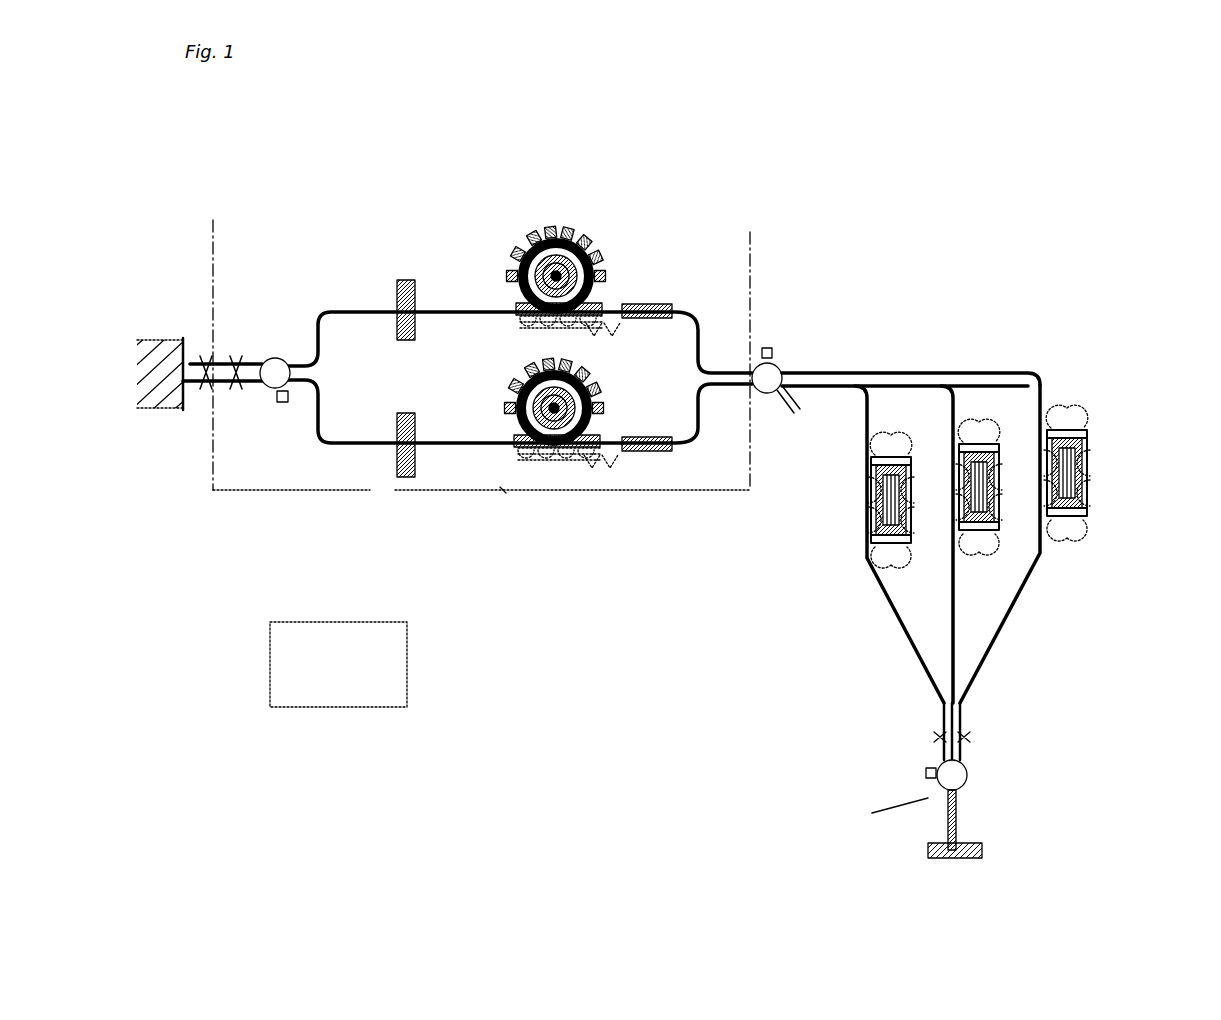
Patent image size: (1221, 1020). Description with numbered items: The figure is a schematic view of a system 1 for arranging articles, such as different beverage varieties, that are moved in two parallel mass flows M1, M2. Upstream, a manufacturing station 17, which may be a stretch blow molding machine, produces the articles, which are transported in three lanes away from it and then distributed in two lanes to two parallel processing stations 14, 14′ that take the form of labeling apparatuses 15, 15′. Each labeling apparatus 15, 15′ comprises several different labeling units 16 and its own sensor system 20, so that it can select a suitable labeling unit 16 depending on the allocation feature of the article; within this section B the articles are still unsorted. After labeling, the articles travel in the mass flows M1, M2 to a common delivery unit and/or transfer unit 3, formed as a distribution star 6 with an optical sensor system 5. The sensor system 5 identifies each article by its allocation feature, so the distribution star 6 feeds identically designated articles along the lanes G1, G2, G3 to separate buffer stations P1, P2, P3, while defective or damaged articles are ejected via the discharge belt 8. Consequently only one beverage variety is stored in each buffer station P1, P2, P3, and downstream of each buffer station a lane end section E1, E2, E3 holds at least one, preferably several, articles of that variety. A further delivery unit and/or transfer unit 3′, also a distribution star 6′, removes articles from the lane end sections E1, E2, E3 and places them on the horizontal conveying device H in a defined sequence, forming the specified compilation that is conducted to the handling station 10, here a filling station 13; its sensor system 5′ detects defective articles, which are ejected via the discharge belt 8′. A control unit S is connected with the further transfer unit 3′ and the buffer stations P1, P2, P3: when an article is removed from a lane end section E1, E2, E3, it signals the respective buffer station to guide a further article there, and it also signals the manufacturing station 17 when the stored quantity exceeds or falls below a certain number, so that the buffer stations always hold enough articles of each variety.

The system 1 is at (553, 694).
The manufacturing station 17 is at (157, 413).
The sensor system 20 is at (305, 318).
The mass flow M1 is at (691, 269).
The mass flow M2 is at (526, 495).
The processing station 14 is at (691, 269).
The labeling apparatus 15 is at (703, 317).
The processing station 14′ is at (526, 495).
The labeling apparatus 15′ is at (680, 452).
The labeling unit 16 is at (540, 234).
The section B is at (503, 490).
The optical sensor system 5 is at (772, 347).
The discharge belt 8 is at (785, 407).
The delivery unit and/or transfer unit 3 is at (911, 327).
The distribution star 6 is at (790, 364).
The lane G1 is at (937, 495).
The lane G2 is at (959, 520).
The lane G3 is at (1086, 508).
The buffer station P1 is at (937, 495).
The buffer station P2 is at (959, 520).
The buffer station P3 is at (1086, 508).
The lane end section E1 is at (873, 427).
The lane end section E2 is at (957, 427).
The lane end section E3 is at (1040, 386).
The further delivery unit and/or transfer unit 3′ is at (1003, 748).
The distribution star 6′ is at (970, 782).
The sensor system 5′ is at (922, 773).
The discharge belt 8′ is at (935, 785).
The horizontal conveying device H is at (958, 822).
The handling station 10 is at (904, 857).
The filling station 13 is at (943, 849).
The control unit S is at (338, 664).